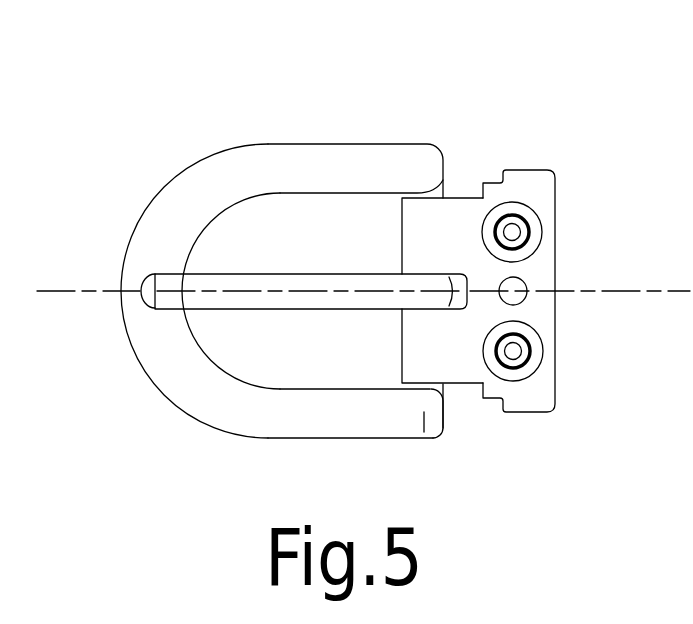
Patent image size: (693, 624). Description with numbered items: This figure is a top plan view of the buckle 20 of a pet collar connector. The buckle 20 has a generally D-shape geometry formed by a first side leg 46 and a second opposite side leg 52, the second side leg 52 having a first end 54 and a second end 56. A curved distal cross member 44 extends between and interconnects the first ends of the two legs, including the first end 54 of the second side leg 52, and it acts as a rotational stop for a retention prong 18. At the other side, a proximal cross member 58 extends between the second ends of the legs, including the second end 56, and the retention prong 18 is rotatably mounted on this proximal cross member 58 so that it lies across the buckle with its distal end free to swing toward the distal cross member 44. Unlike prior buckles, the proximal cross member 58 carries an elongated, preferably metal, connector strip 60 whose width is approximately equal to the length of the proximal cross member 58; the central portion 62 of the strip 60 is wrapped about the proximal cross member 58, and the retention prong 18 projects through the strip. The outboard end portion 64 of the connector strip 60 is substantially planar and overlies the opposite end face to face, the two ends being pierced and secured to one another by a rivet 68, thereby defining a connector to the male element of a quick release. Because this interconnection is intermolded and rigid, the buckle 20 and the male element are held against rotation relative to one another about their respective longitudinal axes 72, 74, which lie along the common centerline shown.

The retention prong 18 is at (232, 292).
The buckle 20 is at (299, 112).
The distal cross member 44 is at (150, 247).
The first side leg 46 is at (383, 170).
The second opposite side leg 52 is at (305, 438).
The first end of second side leg 54 is at (195, 387).
The second end of second side leg 56 is at (425, 436).
The proximal cross member 58 is at (443, 390).
The connector strip 60 is at (458, 225).
The central portion of connector strip 62 is at (422, 350).
The outboard end portion of connector strip 64 is at (543, 193).
The rivet 68 is at (523, 232).
The longitudinal axis 72 is at (592, 292).
The longitudinal axis 74 is at (76, 290).